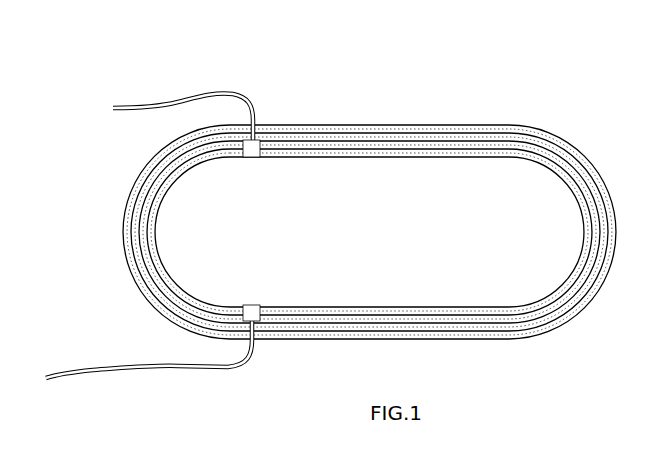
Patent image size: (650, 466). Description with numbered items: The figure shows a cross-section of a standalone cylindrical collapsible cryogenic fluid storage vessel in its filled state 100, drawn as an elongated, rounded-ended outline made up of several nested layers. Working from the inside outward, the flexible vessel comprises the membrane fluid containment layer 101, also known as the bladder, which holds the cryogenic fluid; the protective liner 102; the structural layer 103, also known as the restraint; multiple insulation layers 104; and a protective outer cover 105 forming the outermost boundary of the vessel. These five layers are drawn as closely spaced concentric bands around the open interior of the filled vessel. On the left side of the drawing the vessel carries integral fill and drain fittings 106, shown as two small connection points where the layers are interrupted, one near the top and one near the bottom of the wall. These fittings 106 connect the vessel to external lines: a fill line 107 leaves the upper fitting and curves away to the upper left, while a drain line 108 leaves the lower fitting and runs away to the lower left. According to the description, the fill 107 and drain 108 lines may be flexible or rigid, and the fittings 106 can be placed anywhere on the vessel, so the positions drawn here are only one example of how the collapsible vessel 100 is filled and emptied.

The cylindrical collapsible cryogenic fluid storage vessel in its filled state 100 is at (405, 233).
The membrane fluid containment layer 101 is at (510, 152).
The protective liner 102 is at (454, 145).
The structural layer 103 is at (400, 137).
The insulation layers 104 is at (348, 130).
The protective outer cover 105 is at (298, 120).
The fill and drain fittings 106 is at (246, 160).
The fill line 107 is at (175, 102).
The drain line 108 is at (153, 370).